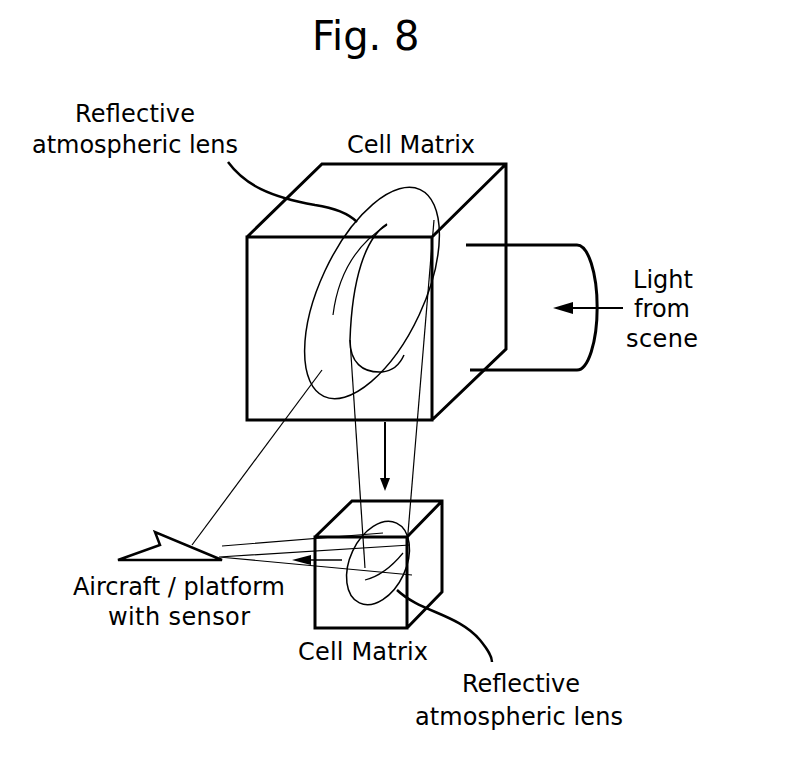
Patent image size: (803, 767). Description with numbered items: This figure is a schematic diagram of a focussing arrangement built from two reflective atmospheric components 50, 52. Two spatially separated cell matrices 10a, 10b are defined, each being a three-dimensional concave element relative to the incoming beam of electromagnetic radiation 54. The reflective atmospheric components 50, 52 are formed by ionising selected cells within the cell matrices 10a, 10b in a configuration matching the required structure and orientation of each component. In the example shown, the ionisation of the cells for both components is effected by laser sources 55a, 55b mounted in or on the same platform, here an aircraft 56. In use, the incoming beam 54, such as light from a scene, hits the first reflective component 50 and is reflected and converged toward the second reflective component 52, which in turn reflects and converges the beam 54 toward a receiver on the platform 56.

The cell matrix 10a is at (267, 288).
The cell matrix 10b is at (437, 522).
The reflective atmospheric component 50 is at (392, 227).
The reflective atmospheric component 52 is at (403, 555).
The incoming beam of electromagnetic radiation 54 is at (573, 255).
The laser source 55a is at (253, 460).
The laser source 55b is at (222, 547).
The aircraft 56 is at (130, 556).